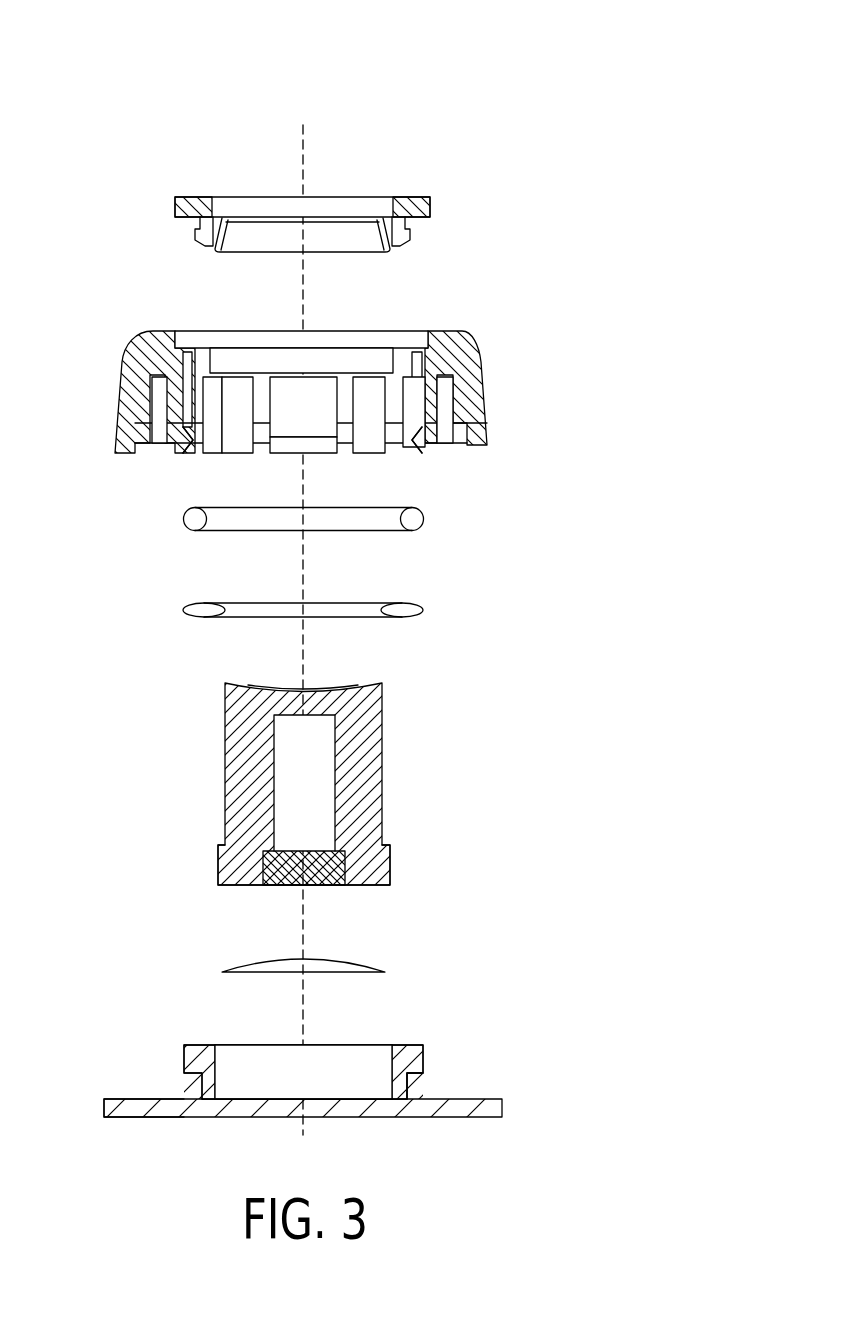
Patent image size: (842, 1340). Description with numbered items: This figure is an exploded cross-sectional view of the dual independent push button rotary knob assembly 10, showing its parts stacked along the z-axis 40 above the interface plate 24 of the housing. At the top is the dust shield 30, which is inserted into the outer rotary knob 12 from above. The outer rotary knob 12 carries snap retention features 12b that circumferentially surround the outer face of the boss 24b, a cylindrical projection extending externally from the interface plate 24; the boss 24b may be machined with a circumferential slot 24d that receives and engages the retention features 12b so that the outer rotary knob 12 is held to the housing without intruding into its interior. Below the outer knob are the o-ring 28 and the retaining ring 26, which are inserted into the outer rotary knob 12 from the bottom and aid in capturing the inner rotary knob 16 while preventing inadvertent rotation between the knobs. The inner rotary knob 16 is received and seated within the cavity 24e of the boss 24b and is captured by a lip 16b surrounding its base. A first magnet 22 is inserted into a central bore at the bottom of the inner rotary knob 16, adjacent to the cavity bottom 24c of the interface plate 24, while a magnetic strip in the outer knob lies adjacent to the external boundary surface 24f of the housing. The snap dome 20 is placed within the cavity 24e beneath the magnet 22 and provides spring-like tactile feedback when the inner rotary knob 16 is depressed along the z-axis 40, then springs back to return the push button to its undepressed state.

The push button rotary knob assembly 10 is at (357, 83).
The z-axis 40 is at (307, 163).
The dust shield 30 is at (178, 192).
The outer rotary knob 12 is at (470, 338).
The snap retention features 12b is at (180, 453).
The o-ring 28 is at (175, 516).
The retaining ring 26 is at (175, 605).
The inner rotary knob 16 is at (382, 727).
The lip 16b is at (395, 845).
The first magnet 22 is at (278, 867).
The snap dome 20 is at (363, 962).
The interface plate 24 is at (470, 1117).
The boss 24b is at (180, 1042).
The cavity 24e is at (252, 1073).
The external boundary surface 24f is at (123, 1097).
The cavity bottom 24c is at (310, 1097).
The circumferential slot 24d is at (413, 1087).